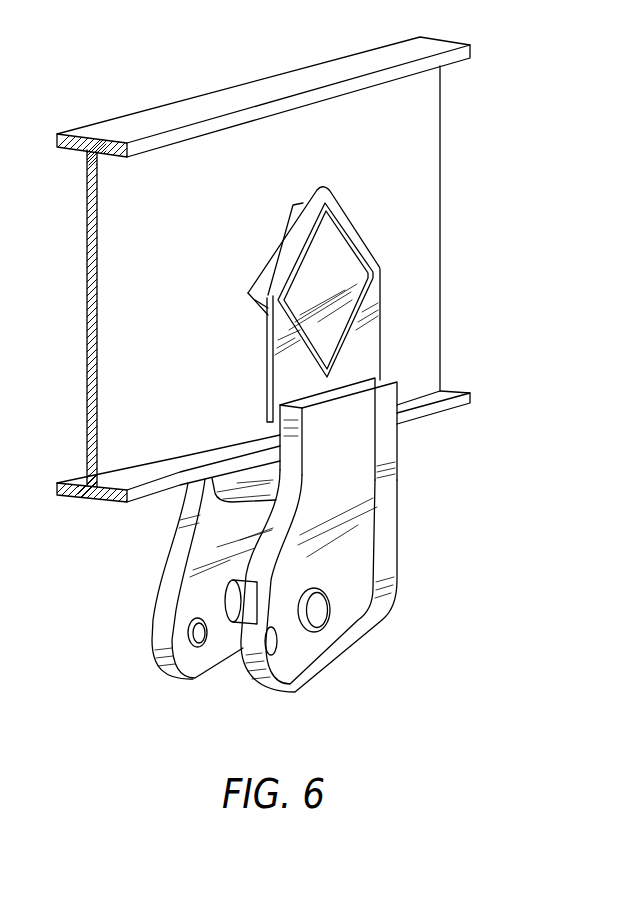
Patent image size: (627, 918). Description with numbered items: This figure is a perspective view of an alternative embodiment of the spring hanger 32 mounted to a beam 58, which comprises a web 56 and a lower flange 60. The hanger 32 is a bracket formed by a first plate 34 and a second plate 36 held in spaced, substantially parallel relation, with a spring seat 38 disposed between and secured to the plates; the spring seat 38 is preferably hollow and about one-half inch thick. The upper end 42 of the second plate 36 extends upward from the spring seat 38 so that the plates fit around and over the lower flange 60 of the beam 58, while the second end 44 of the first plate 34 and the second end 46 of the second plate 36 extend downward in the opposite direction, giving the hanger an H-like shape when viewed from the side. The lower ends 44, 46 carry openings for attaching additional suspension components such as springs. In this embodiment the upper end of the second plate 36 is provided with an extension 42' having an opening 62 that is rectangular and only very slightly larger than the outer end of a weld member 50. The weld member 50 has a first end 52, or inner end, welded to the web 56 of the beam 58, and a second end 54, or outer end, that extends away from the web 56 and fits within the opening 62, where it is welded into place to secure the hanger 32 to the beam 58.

The spring hanger 32 is at (420, 668).
The first plate 34 is at (160, 621).
The second plate 36 is at (350, 555).
The spring seat 38 is at (247, 493).
The first end of second plate 42 is at (402, 429).
The extension 42' is at (445, 348).
The second end of first plate 44 is at (172, 668).
The second end of second plate 46 is at (264, 678).
The weld member 50 is at (268, 270).
The first end of weld member 52 is at (278, 234).
The second end of weld member 54 is at (335, 252).
The web 56 is at (170, 221).
The beam 58 is at (163, 118).
The lower flange 60 is at (150, 478).
The opening 62 is at (352, 338).